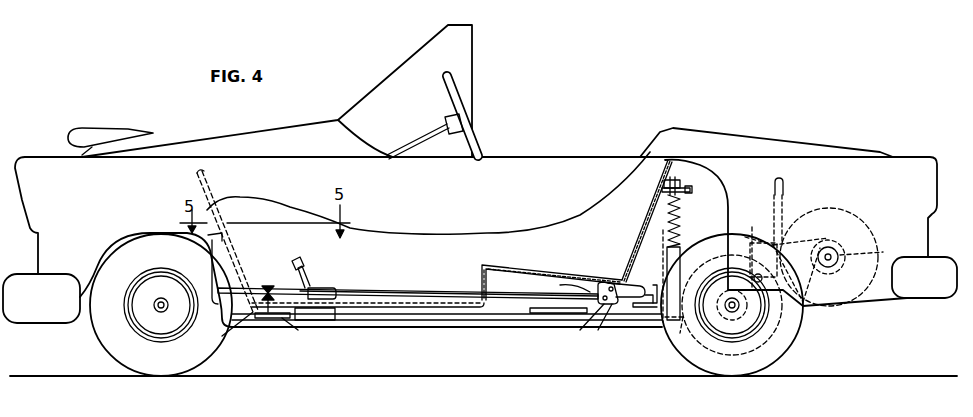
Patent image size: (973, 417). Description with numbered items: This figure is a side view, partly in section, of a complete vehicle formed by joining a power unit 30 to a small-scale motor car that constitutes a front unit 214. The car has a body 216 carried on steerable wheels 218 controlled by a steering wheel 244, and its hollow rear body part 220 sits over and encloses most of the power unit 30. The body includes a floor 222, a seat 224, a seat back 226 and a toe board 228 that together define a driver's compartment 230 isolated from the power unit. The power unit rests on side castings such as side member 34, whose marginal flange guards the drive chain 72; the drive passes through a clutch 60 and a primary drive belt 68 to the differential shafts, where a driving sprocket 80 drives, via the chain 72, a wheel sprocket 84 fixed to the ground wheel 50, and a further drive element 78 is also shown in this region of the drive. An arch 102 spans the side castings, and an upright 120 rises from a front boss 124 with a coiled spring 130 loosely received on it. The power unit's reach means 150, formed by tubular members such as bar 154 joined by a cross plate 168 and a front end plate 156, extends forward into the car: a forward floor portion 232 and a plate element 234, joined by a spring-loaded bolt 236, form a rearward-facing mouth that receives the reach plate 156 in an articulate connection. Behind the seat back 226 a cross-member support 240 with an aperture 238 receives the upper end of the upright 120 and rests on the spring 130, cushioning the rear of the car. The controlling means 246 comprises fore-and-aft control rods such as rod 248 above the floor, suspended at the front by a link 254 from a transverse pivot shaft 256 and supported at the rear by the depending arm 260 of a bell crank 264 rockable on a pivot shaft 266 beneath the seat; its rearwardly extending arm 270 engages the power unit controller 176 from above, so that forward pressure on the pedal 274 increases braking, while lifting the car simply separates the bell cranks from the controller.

The power unit 30 is at (805, 329).
The side member 34 is at (845, 223).
The ground wheel 50 is at (782, 352).
The clutch 60 is at (752, 236).
The primary drive belt 68 is at (782, 240).
The drive chain 72 is at (822, 288).
The pulley 78 is at (870, 236).
The driving sprocket 80 is at (868, 245).
The wheel sprocket 84 is at (736, 325).
The arch 102 is at (784, 186).
The upright 120 is at (674, 176).
The front boss 124 is at (680, 245).
The coiled spring 130 is at (655, 193).
The reach means 150 is at (413, 320).
The tubular member 154 is at (472, 320).
The front end plate 156 is at (287, 327).
The cross plate 168 is at (560, 315).
The power unit controller 176 is at (630, 322).
The front unit 214 is at (160, 119).
The body 216 is at (313, 128).
The wheels 218 is at (156, 368).
The rear body part 220 is at (783, 150).
The floor 222 is at (385, 305).
The seat 224 is at (503, 271).
The seat back 226 is at (627, 262).
The toe board 228 is at (218, 210).
The driver's compartment 230 is at (457, 258).
The floor portion 232 is at (243, 308).
The plate element 234 is at (263, 318).
The spring-loaded bolt 236 is at (268, 287).
The aperture 238 is at (694, 178).
The cross-member support 240 is at (692, 190).
The steering wheel 244 is at (456, 96).
The controlling means 246 is at (349, 286).
The control rod 248 is at (445, 294).
The link 254 is at (215, 265).
The transverse pivot shaft 256 is at (210, 241).
The depending arm 260 is at (600, 306).
The bell crank 264 is at (610, 284).
The transverse pivot shaft 266 is at (590, 290).
The rearwardly extending arm 270 is at (625, 300).
The pedal 274 is at (318, 258).